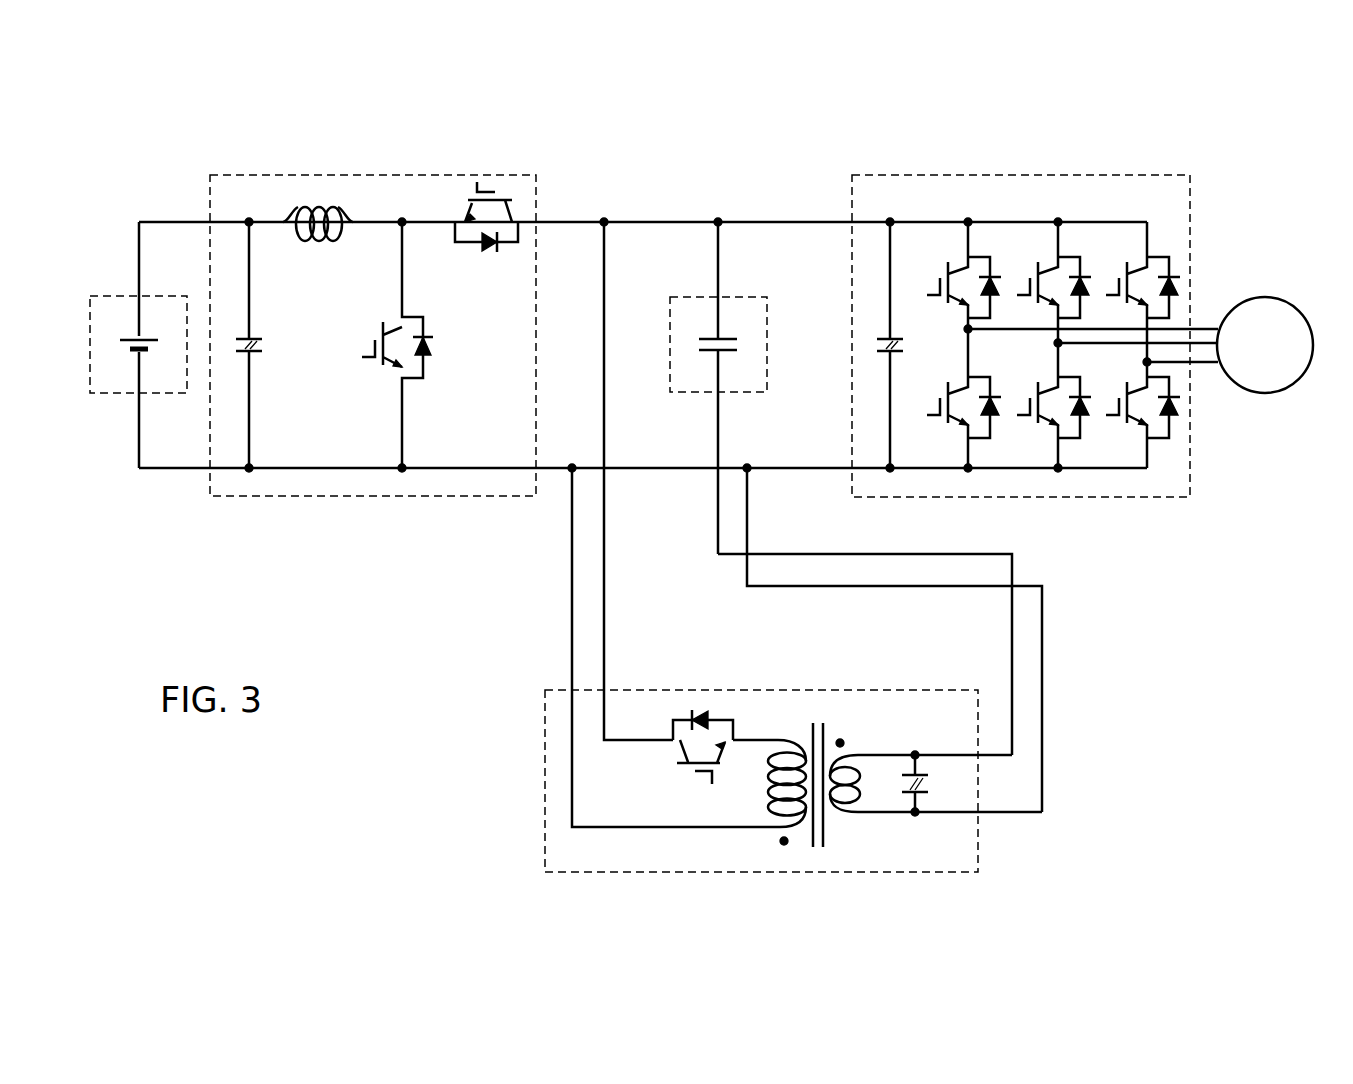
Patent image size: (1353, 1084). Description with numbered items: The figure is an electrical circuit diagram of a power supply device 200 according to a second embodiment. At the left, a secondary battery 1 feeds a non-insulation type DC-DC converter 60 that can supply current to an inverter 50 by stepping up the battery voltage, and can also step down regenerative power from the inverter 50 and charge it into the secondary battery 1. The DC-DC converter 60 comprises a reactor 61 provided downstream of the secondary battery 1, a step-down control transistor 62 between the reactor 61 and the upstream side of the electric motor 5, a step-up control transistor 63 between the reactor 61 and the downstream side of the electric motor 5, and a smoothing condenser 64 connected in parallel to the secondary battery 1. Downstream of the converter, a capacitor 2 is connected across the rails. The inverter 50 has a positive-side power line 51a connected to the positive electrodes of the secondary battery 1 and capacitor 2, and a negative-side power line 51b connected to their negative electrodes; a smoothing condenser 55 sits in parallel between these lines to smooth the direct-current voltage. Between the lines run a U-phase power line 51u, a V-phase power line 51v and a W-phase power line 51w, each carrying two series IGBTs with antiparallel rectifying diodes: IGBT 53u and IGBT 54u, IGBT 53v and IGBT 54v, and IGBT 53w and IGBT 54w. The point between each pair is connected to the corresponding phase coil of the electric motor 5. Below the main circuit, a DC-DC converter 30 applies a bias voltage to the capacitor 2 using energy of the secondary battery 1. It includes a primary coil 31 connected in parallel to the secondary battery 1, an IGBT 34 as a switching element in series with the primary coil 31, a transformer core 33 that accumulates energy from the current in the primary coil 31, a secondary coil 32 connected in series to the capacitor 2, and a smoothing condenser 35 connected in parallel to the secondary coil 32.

The secondary battery 1 is at (112, 295).
The capacitor 2 is at (690, 296).
The electric motor 5 is at (1262, 297).
The power supply device 200 is at (784, 163).
The DC-DC converter 30 is at (923, 874).
The primary coil 31 is at (790, 832).
The secondary coil 32 is at (862, 816).
The transformer core 33 is at (816, 788).
The IGBT 34 is at (678, 752).
The smoothing condenser 35 is at (918, 755).
The inverter 50 is at (1181, 175).
The positive-side power line 51a is at (912, 220).
The negative-side power line 51b is at (925, 472).
The U-phase power line 51u is at (958, 298).
The V-phase power line 51v is at (1050, 298).
The W-phase power line 51w is at (1133, 296).
The IGBT 53u is at (950, 308).
The IGBT 53v is at (1040, 308).
The IGBT 53w is at (1126, 310).
The IGBT 54u is at (949, 418).
The IGBT 54v is at (1039, 418).
The IGBT 54w is at (1129, 418).
The smoothing condenser 55 is at (884, 357).
The DC-DC converter 60 is at (517, 175).
The reactor 61 is at (341, 207).
The step-down control transistor 62 is at (507, 213).
The step-up control transistor 63 is at (392, 364).
The smoothing condenser 64 is at (243, 357).